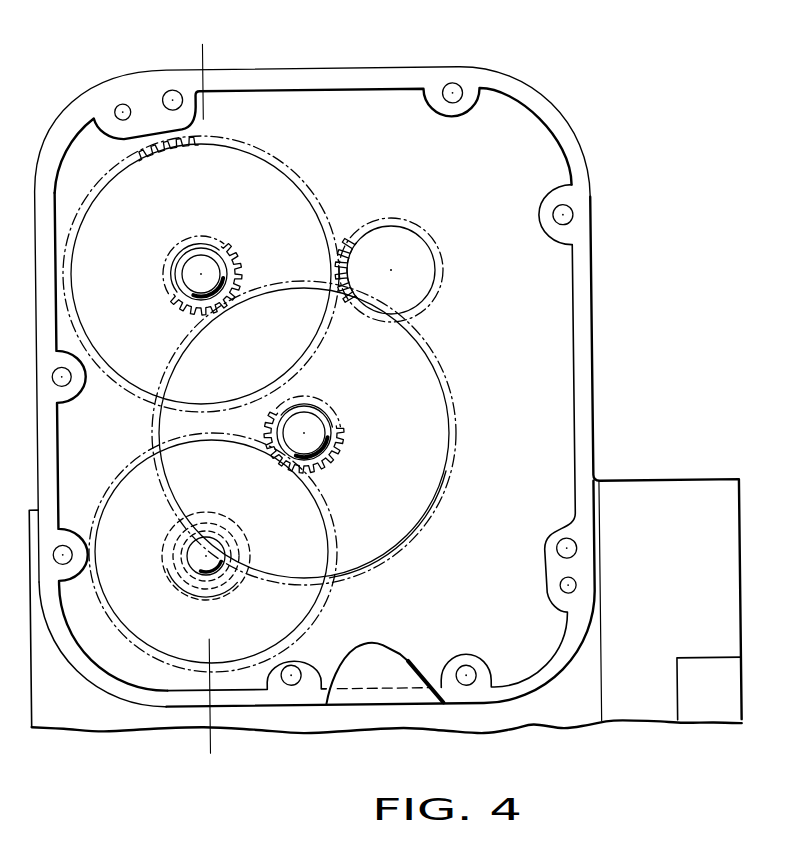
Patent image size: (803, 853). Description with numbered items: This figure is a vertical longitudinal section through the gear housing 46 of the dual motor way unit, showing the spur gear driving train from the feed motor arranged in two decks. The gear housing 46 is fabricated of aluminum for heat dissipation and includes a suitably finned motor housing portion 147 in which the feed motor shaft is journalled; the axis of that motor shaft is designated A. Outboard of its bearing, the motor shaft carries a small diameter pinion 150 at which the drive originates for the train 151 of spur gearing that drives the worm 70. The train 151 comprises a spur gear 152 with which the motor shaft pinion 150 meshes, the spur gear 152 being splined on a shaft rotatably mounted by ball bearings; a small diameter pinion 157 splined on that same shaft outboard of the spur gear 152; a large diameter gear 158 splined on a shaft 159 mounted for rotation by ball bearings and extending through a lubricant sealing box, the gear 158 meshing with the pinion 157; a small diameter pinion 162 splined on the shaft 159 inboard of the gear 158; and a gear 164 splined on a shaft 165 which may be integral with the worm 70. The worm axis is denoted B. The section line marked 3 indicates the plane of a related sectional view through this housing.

The gear housing 46 is at (300, 712).
The motor housing portion 147 is at (365, 696).
The section line 3- 3 is at (206, 50).
The spur gear 152 is at (323, 211).
The small diameter pinion 157 is at (230, 252).
The small diameter pinion 150 is at (434, 292).
The axis of motor shaft A is at (383, 272).
The large diameter gear 158 is at (455, 462).
The train of spur gearing 151 is at (454, 580).
The shaft 159 is at (317, 432).
The small diameter pinion 162 is at (336, 461).
The gear 164 is at (317, 605).
The shaft 165 is at (188, 560).
The worm 70 is at (217, 583).
The worm axis B is at (197, 593).